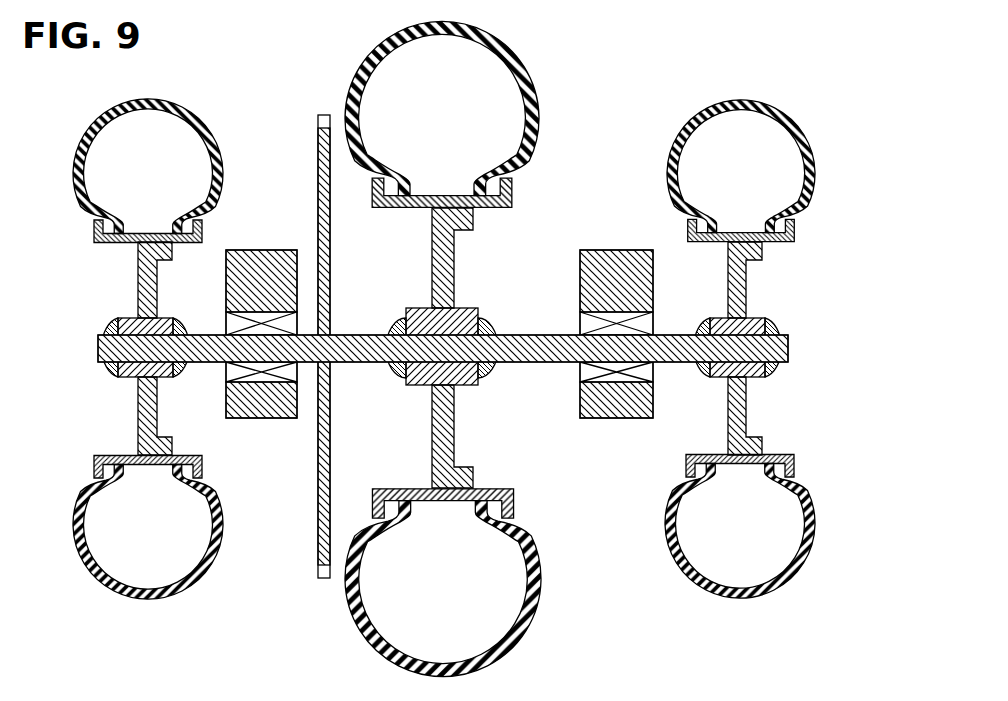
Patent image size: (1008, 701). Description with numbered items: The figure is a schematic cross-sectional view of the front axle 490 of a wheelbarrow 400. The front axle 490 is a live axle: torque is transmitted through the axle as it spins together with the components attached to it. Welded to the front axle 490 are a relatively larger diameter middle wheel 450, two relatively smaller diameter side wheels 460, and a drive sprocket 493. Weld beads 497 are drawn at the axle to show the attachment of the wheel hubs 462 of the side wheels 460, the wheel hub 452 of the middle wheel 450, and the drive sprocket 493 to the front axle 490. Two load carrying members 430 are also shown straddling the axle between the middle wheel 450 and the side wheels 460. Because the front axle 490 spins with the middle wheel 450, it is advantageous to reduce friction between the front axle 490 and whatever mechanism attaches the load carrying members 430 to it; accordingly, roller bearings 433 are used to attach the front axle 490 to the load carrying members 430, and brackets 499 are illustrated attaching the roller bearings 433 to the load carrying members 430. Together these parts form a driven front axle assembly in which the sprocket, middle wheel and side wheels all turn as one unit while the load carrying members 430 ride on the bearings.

The wheelbarrow 400 is at (818, 113).
The load carrying member 430 is at (262, 258).
The roller bearing 433 is at (243, 325).
The middle wheel 450 is at (520, 638).
The wheel hub 452 is at (455, 435).
The side wheel 460 is at (182, 588).
The wheel hub 462 is at (138, 276).
The front axle 490 is at (100, 348).
The drive sprocket 493 is at (316, 570).
The weld bead 497 is at (110, 322).
The bracket 499 is at (273, 418).